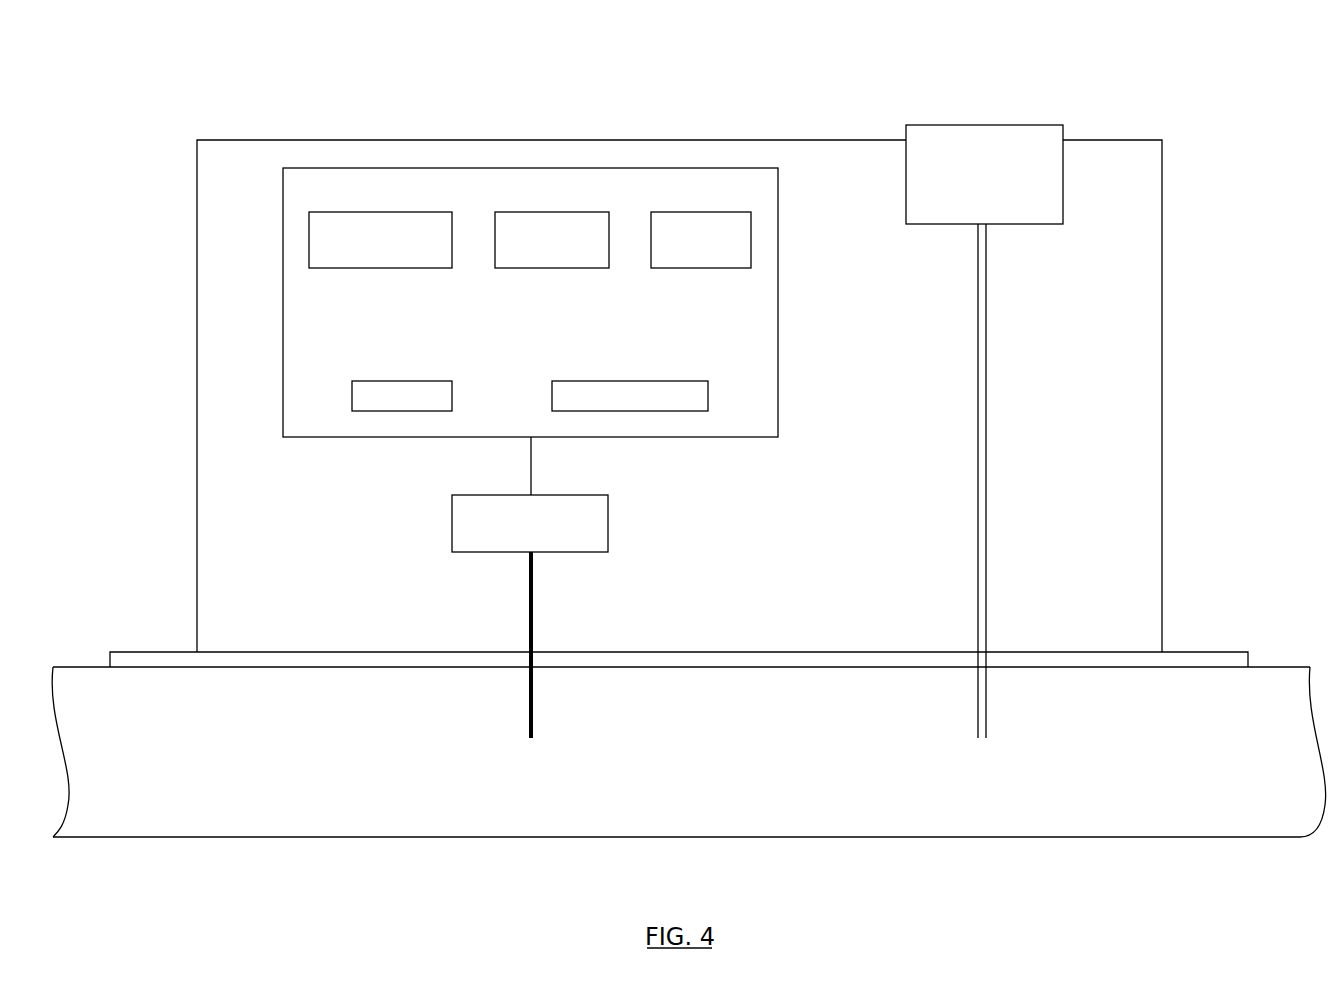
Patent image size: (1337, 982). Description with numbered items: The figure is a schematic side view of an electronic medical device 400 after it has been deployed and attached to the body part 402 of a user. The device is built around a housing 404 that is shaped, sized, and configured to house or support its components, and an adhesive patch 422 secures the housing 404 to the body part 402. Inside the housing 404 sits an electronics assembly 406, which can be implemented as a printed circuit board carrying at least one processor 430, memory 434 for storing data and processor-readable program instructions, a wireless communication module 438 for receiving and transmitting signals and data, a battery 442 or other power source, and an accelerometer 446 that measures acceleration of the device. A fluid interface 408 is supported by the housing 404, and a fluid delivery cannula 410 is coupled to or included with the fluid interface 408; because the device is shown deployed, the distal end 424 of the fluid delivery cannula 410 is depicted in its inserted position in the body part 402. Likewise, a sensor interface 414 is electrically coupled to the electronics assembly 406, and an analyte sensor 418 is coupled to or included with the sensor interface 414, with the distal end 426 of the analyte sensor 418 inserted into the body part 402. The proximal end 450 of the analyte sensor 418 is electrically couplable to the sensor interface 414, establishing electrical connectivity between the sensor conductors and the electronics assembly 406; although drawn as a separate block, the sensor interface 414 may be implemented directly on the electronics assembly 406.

The electronic medical device 400 is at (257, 90).
The body part 402 is at (1145, 838).
The housing 404 is at (197, 238).
The electronics assembly 406 is at (778, 288).
The fluid interface 408 is at (1035, 225).
The fluid delivery cannula 410 is at (986, 373).
The sensor interface 414 is at (608, 515).
The analyte sensor 418 is at (533, 608).
The adhesive patch 422 is at (1212, 652).
The distal end of the fluid delivery cannula 424 is at (986, 723).
The distal end of the analyte sensor 426 is at (533, 715).
The processor 430 is at (350, 268).
The memory 434 is at (548, 268).
The wireless communication module 438 is at (700, 268).
The battery 442 is at (408, 381).
The accelerometer 446 is at (625, 381).
The proximal end of the analyte sensor 450 is at (510, 565).